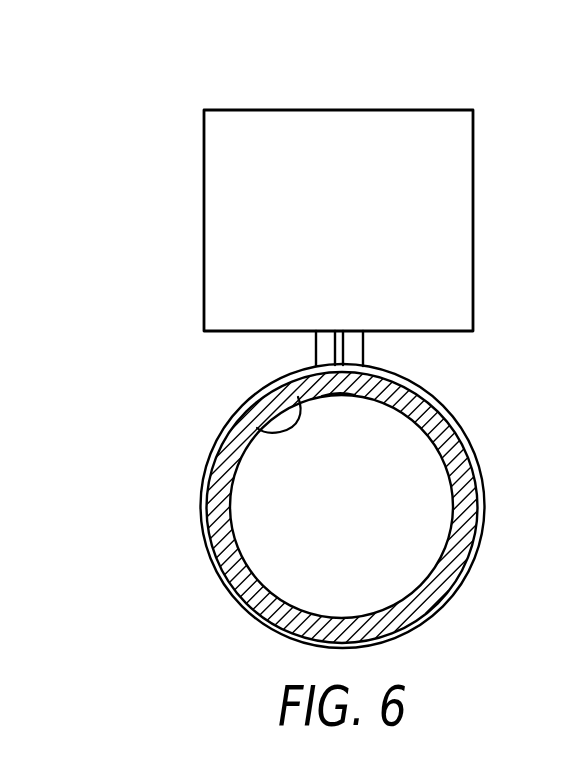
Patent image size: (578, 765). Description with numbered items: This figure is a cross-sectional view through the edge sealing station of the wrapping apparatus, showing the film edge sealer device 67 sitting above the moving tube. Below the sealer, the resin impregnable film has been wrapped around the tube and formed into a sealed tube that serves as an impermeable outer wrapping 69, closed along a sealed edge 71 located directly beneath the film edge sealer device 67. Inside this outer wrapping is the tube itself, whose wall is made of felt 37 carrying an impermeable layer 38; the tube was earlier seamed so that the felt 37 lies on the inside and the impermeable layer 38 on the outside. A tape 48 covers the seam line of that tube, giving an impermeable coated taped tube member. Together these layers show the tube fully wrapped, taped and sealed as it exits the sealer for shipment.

The film edge sealer device 67 is at (242, 166).
The edge seal 71 is at (340, 345).
The impermeable outer wrapping 69 is at (450, 412).
The felt 37 is at (438, 578).
The impermeable layer 38 is at (258, 428).
The tape 48 is at (352, 397).